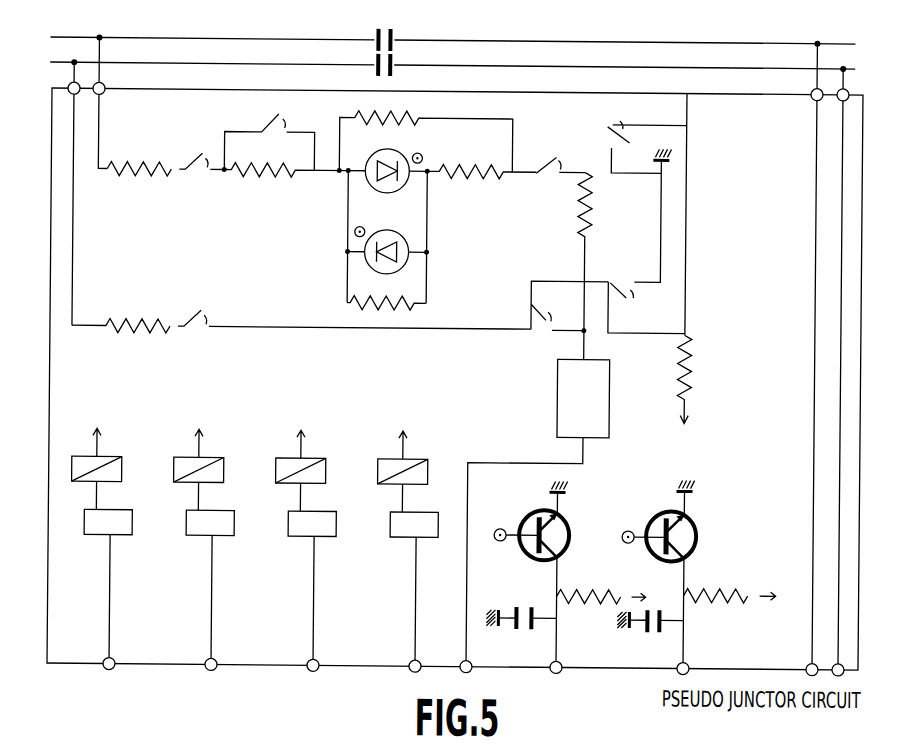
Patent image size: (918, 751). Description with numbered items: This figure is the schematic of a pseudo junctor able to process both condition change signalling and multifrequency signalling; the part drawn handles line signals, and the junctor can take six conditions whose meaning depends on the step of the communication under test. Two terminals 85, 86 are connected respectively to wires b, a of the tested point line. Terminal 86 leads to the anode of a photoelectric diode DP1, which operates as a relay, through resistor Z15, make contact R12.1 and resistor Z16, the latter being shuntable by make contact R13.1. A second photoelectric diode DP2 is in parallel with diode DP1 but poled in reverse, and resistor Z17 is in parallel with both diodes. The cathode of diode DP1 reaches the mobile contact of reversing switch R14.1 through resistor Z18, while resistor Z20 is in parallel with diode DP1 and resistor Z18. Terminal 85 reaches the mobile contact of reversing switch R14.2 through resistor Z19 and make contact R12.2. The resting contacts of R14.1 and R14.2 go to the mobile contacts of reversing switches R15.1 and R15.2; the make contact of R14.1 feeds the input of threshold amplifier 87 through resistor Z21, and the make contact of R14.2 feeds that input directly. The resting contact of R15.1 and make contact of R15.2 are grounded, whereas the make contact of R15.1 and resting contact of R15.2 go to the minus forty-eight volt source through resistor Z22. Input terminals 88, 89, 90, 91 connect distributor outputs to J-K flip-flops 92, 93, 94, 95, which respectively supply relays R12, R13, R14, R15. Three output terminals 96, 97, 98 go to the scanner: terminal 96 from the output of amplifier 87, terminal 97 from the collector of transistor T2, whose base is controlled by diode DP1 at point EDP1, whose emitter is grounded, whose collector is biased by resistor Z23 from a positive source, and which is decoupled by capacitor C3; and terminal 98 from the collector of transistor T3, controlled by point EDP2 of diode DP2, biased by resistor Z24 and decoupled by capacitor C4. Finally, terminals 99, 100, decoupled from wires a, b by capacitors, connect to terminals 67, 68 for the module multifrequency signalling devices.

The wire a is at (82, 33).
The wire b is at (70, 60).
The terminal 85 is at (68, 86).
The terminal 86 is at (105, 92).
The terminal 99 is at (838, 96).
The terminal 100 is at (810, 88).
The resistor Z15 is at (154, 153).
The make contact R12.1 is at (198, 170).
The resistor Z16 is at (286, 194).
The make contact R13.1 is at (283, 132).
The resistor Z20 is at (423, 117).
The photoelectric diode DP1 is at (405, 188).
The resistor Z18 is at (490, 173).
The reversing switch R14.1 is at (559, 157).
The reversing switch R15.1 is at (647, 133).
The resistor Z21 is at (615, 267).
The photoelectric diode DP2 is at (408, 264).
The resistor Z17 is at (358, 303).
The resistor Z19 is at (154, 303).
The make contact R12.2 is at (198, 327).
The reversing switch R14.2 is at (533, 308).
The reversing switch R15.2 is at (647, 256).
The threshold amplifier 87 is at (560, 386).
The resistor Z22 is at (692, 376).
The relay R12 is at (133, 448).
The relay R13 is at (235, 448).
The relay R14 is at (337, 448).
The relay R15 is at (439, 448).
The J-K flip-flop 92 is at (104, 534).
The J-K flip-flop 93 is at (206, 534).
The J-K flip-flop 94 is at (308, 534).
The J-K flip-flop 95 is at (410, 534).
The input terminal 88 is at (119, 658).
The input terminal 89 is at (221, 658).
The input terminal 90 is at (323, 658).
The input terminal 91 is at (425, 658).
The transistor T2 is at (560, 506).
The transistor T3 is at (690, 524).
The control point EDP1 is at (498, 530).
The control point EDP2 is at (626, 531).
The capacitor C3 is at (539, 600).
The capacitor C4 is at (664, 628).
The resistor Z23 is at (566, 587).
The resistor Z24 is at (702, 586).
The output terminal 96 is at (476, 658).
The output terminal 97 is at (572, 651).
The output terminal 98 is at (702, 651).
The terminal 67 is at (817, 657).
The terminal 68 is at (838, 658).